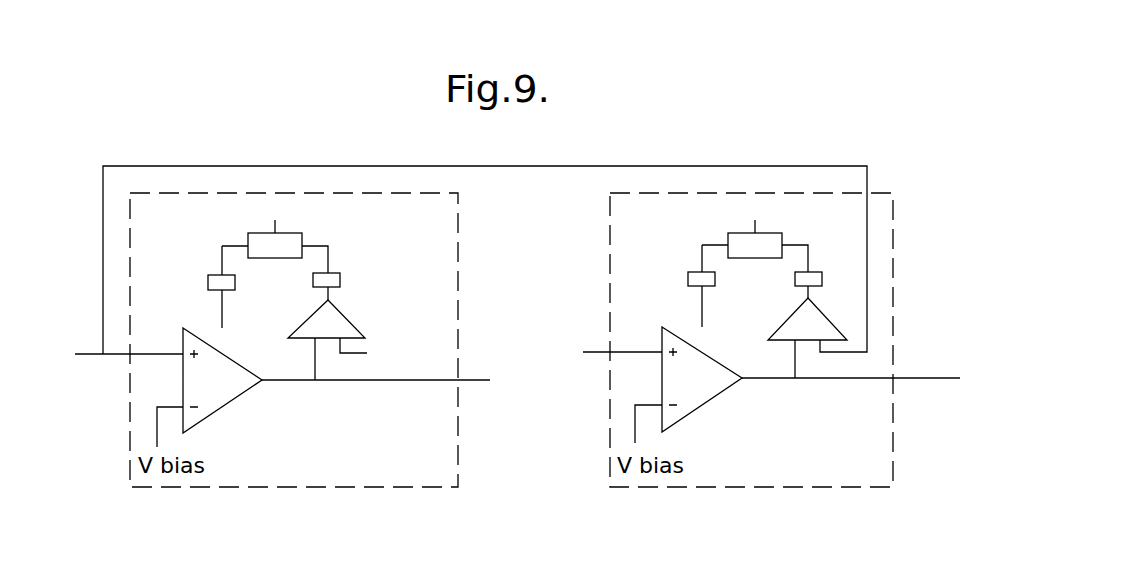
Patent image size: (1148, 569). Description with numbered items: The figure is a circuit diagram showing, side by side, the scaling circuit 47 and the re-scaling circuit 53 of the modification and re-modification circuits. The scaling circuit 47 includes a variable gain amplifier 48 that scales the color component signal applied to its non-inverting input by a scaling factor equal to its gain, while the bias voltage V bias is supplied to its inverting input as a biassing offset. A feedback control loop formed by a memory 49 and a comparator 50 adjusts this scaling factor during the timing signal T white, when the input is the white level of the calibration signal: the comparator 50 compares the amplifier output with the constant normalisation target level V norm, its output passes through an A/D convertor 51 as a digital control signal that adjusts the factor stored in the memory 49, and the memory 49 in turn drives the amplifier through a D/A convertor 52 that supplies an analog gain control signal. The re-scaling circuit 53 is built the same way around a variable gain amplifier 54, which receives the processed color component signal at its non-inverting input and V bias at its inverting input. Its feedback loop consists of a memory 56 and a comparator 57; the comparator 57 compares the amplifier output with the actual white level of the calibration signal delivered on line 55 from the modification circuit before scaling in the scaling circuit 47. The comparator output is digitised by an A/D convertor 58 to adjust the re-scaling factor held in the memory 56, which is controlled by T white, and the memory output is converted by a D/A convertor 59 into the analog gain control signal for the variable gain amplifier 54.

The scaling circuit 47 is at (242, 487).
The variable gain amplifier 48 is at (232, 402).
The memory 49 is at (262, 258).
The comparator 50 is at (345, 318).
The A/D convertor 51 is at (340, 281).
The D/A convertor 52 is at (208, 281).
The re-scaling circuit 53 is at (720, 487).
The variable gain amplifier 54 is at (712, 400).
The line 55 is at (508, 166).
The memory 56 is at (742, 258).
The comparator 57 is at (826, 318).
The A/D convertor 58 is at (822, 280).
The D/A convertor 59 is at (688, 279).